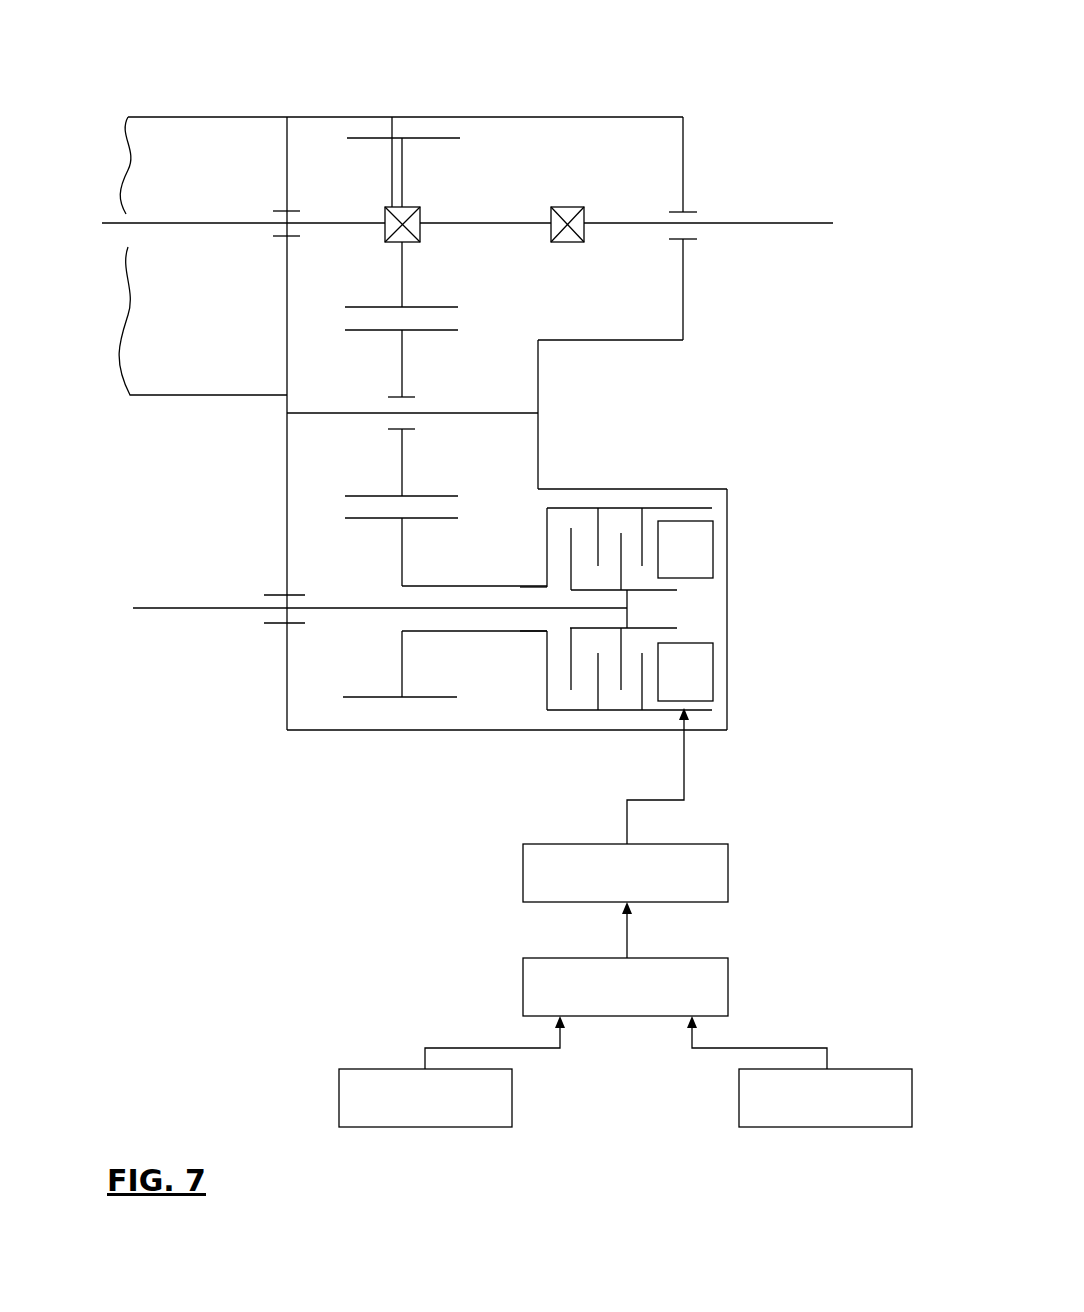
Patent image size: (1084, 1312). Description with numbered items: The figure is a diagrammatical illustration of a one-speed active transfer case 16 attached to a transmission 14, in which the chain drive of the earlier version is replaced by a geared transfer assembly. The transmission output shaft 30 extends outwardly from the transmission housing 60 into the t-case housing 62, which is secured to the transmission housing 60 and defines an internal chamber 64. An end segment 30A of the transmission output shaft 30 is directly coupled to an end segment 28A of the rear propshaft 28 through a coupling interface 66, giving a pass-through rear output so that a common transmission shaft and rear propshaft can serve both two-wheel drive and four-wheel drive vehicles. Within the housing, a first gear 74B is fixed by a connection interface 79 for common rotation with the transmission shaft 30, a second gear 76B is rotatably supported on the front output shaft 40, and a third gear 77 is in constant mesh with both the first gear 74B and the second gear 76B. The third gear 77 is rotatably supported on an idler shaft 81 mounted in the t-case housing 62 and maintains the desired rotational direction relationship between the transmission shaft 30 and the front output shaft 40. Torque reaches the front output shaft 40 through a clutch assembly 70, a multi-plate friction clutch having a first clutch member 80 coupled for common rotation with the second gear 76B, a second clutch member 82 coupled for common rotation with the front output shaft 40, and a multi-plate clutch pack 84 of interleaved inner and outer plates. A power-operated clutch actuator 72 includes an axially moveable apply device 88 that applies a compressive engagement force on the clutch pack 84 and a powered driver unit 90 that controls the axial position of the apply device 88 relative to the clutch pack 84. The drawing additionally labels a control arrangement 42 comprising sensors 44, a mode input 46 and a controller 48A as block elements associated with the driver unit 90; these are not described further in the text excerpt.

The transmission 14 is at (158, 386).
The transfer case 16 is at (628, 78).
The rear propshaft 28 is at (805, 223).
The end segment of rear propshaft 28A is at (610, 223).
The transmission output shaft 30 is at (218, 223).
The end segment of transmission output shaft 30A is at (520, 223).
The front output shaft 40 is at (180, 608).
The control system 42 is at (424, 981).
The sensors 44 is at (512, 1095).
The mode selector 46 is at (739, 1096).
The controller 48A is at (728, 981).
The transmission housing 60 is at (205, 117).
The t-case housing 62 is at (683, 130).
The internal chamber 64 is at (665, 300).
The coupling interface 66 is at (565, 245).
The clutch assembly 70 is at (635, 480).
The power-operated clutch actuator 72 is at (750, 741).
The first gear 74B is at (420, 137).
The second gear 76B is at (358, 700).
The third gear 77 is at (402, 366).
The connection interface 79 is at (392, 117).
The first clutch member 80 is at (546, 678).
The idler shaft 81 is at (330, 413).
The second clutch member 82 is at (655, 594).
The multi-plate clutch pack 84 is at (630, 548).
The apply device 88 is at (703, 551).
The powered driver unit 90 is at (728, 870).